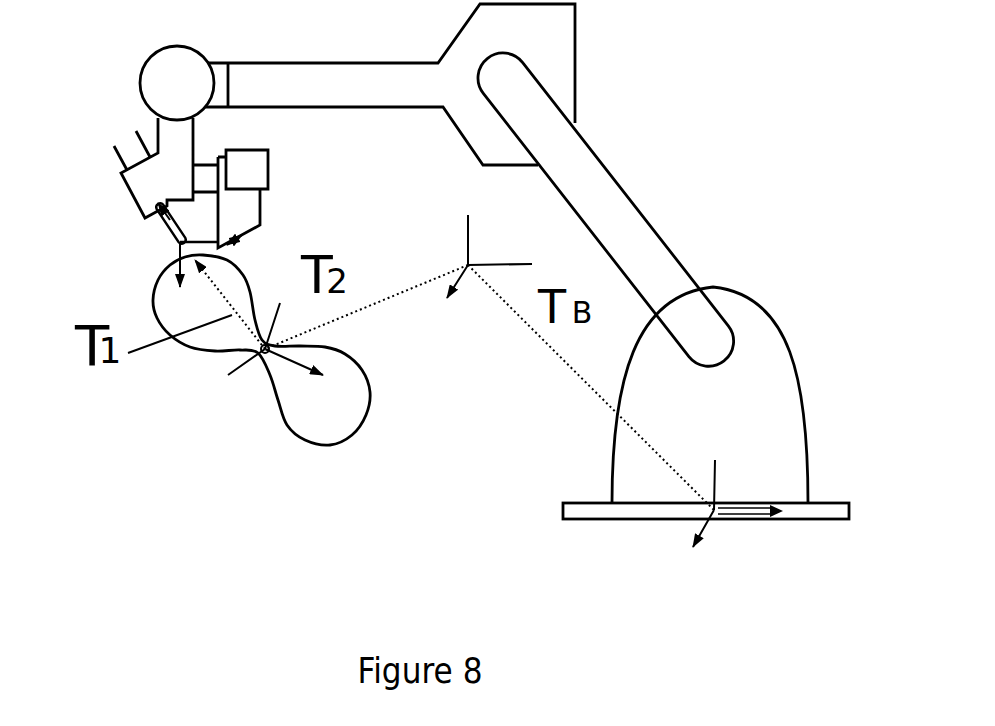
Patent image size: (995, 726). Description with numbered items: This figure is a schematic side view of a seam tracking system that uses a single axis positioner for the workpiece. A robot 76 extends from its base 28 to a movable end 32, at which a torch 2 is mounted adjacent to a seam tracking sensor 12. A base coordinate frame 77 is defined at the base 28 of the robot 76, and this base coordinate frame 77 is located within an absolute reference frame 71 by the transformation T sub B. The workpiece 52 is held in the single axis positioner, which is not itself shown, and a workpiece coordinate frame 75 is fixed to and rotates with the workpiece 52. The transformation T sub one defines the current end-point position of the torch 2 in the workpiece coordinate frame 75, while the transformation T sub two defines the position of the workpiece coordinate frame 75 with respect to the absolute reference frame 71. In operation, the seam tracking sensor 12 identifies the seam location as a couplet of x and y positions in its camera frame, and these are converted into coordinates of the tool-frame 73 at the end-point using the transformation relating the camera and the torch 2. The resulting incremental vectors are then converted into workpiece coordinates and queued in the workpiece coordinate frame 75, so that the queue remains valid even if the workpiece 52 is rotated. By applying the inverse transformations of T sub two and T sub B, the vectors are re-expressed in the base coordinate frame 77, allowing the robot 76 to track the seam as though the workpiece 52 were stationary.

The torch 2 is at (160, 229).
The seam tracking sensor 12 is at (252, 215).
The base 28 is at (750, 407).
The movable end 32 is at (178, 134).
The workpiece 52 is at (313, 408).
The absolute reference frame 71 is at (470, 272).
The tool-frame 73 is at (173, 247).
The workpiece coordinate frame 75 is at (262, 350).
The robot 76 is at (600, 175).
The base coordinate frame 77 is at (718, 515).